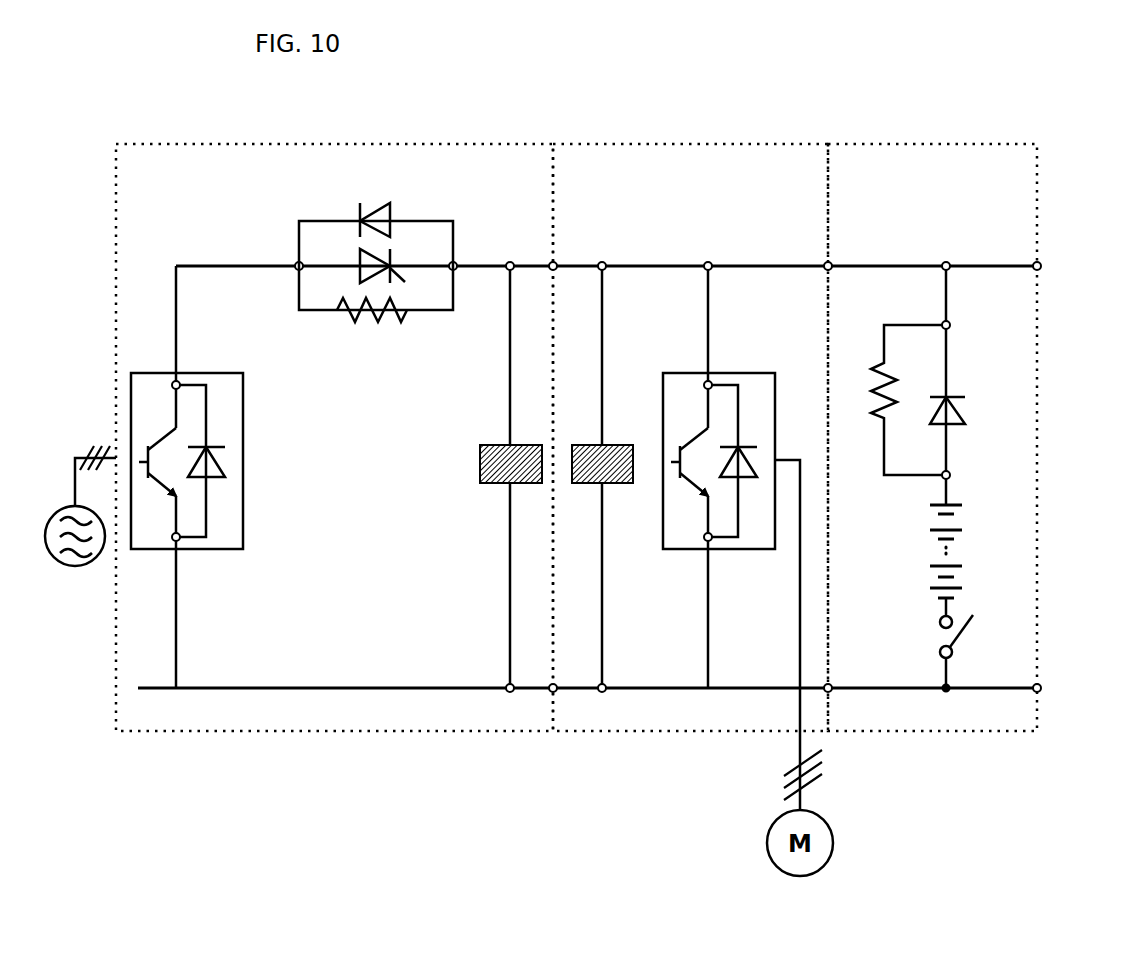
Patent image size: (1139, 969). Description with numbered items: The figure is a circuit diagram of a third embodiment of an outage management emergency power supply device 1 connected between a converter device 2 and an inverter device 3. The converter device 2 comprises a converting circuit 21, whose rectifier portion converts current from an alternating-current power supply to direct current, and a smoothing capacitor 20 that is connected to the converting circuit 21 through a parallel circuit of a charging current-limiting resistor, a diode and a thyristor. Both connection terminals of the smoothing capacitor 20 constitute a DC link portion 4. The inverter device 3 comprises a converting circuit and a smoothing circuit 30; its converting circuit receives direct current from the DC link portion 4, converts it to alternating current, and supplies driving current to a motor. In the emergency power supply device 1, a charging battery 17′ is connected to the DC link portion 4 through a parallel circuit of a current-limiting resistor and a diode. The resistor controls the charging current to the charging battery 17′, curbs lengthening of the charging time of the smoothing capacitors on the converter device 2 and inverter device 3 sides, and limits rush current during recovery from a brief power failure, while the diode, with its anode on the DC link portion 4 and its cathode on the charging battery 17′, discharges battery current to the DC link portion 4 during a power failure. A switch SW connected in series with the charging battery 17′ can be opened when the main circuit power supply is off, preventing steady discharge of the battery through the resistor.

The emergency power supply device 1 is at (975, 145).
The converter device 2 is at (458, 145).
The inverter device 3 is at (733, 145).
The DC link portion 4 is at (672, 266).
The charging battery 17′ is at (960, 566).
The smoothing capacitor 20 is at (502, 483).
The converting circuit 21 is at (246, 476).
The smoothing circuit 30 is at (610, 483).
The switch SW is at (965, 645).